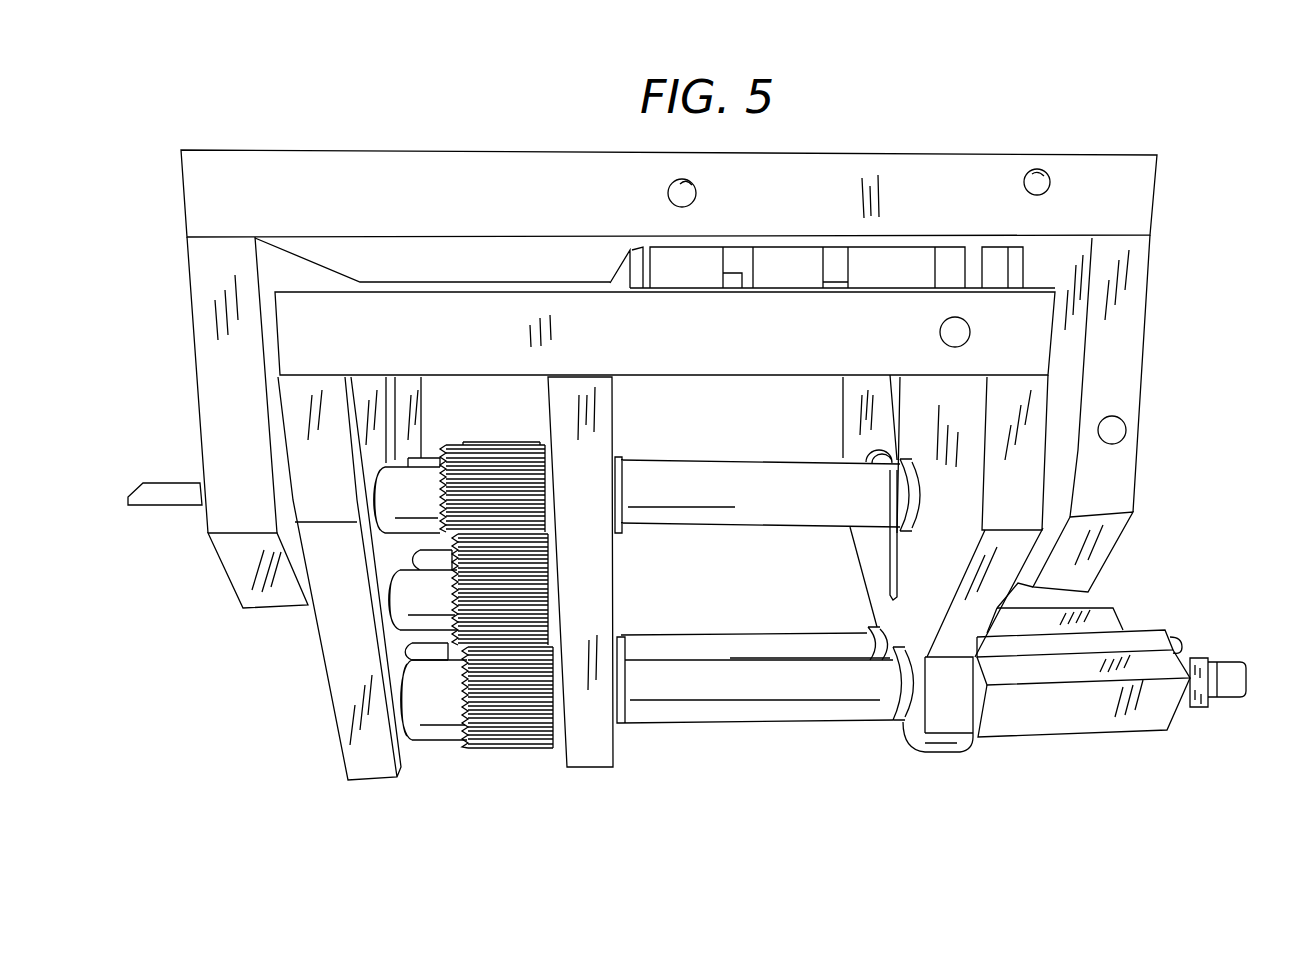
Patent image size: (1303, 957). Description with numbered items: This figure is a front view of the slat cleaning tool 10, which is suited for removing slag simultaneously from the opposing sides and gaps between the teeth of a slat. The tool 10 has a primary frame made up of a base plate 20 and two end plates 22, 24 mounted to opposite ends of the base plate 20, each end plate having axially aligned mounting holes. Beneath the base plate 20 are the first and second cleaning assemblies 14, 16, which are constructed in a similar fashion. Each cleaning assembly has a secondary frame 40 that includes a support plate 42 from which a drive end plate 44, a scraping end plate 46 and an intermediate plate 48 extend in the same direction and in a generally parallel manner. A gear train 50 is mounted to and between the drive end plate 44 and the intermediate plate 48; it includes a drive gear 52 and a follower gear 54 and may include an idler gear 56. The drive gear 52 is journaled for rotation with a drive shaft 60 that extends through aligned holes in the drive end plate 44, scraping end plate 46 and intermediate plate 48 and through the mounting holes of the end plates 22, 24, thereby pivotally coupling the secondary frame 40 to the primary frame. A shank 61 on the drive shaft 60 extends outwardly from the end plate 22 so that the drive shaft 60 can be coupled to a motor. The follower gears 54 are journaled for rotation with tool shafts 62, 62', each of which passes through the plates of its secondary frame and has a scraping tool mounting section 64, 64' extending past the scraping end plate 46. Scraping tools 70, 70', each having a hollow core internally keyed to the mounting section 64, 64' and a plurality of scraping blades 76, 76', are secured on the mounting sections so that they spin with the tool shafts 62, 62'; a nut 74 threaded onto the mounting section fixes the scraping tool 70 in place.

The tool 10 is at (345, 133).
The first cleaning assembly 14 is at (670, 737).
The second cleaning assembly 16 is at (815, 418).
The base plate 20 is at (552, 172).
The end plate 22 is at (233, 397).
The end plate 24 is at (1120, 336).
The secondary frame 40 is at (328, 760).
The support plate 42 is at (708, 350).
The drive end plate 44 is at (350, 628).
The scraping end plate 46 is at (933, 700).
The intermediate plate 48 is at (593, 747).
The gear train 50 is at (475, 760).
The drive gear 52 is at (510, 500).
The follower gear 54 is at (532, 727).
The idler gear 56 is at (525, 600).
The drive shaft 60 is at (767, 512).
The shank 61 is at (160, 512).
The tool shaft 62 is at (765, 716).
The tool shaft 62' is at (755, 618).
The scraping tool mounting section 64 is at (1238, 728).
The scraping tool mounting section 64' is at (1226, 605).
The scraping tool 70 is at (1083, 729).
The scraping tool 70' is at (1117, 566).
The nut 74 is at (1198, 698).
The scraping blades 76 is at (1076, 743).
The scraping blades 76' is at (1093, 534).